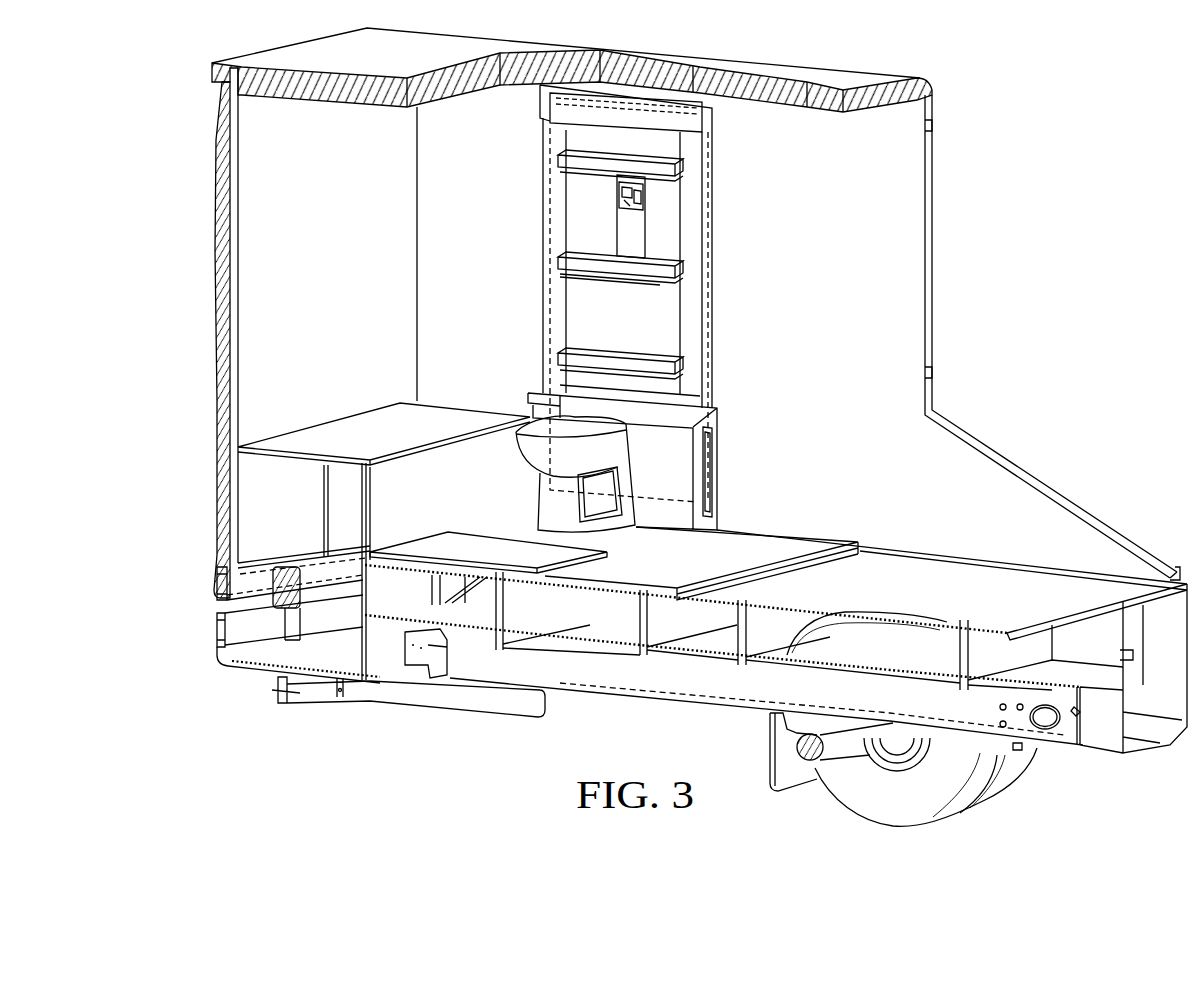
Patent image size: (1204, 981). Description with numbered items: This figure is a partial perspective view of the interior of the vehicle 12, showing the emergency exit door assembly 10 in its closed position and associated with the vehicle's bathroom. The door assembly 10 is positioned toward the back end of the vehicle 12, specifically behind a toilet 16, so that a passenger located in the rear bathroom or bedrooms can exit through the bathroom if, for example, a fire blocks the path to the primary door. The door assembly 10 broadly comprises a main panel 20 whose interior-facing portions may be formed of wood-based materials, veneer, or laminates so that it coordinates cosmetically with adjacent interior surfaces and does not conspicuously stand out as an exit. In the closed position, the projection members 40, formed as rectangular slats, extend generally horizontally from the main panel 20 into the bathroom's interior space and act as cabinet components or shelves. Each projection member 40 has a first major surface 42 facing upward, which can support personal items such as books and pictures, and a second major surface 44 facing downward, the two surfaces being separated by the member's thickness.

The door assembly 10 is at (735, 210).
The vehicle 12 is at (178, 101).
The toilet 16 is at (538, 426).
The main panel 20 is at (610, 313).
The projection members 40 is at (577, 262).
The first major surface 42 is at (600, 252).
The second major surface 44 is at (610, 277).